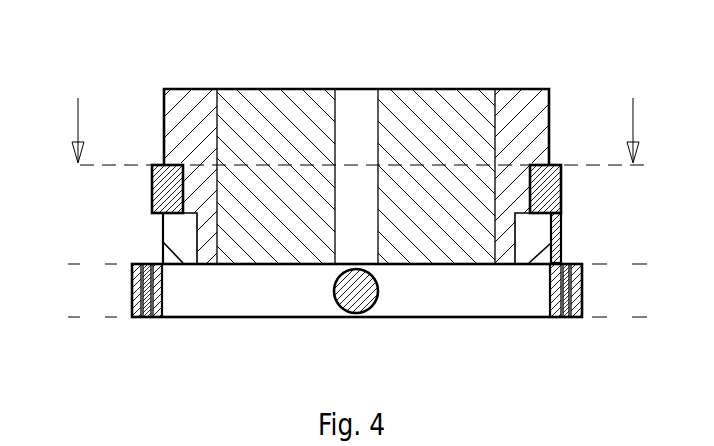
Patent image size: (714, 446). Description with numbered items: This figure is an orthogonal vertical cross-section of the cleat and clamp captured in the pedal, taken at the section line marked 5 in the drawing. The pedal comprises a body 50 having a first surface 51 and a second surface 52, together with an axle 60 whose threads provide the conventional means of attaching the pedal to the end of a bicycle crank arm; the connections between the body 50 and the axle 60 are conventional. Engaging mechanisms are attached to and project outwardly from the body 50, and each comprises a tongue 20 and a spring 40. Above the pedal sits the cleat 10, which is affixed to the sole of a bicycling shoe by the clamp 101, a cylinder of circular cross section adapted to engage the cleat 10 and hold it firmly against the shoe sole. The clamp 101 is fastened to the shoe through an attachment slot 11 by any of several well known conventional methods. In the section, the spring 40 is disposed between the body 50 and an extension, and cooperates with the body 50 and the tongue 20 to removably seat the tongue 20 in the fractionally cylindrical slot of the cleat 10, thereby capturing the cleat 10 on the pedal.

The section line / viewing direction of FIG. 5 is at (356, 118).
The cleat 10 is at (200, 113).
The attachment slot 11 is at (355, 110).
The clamp 101 is at (422, 143).
The tongue 20 is at (172, 190).
The spring 40 is at (147, 318).
The body 50 is at (132, 287).
The first surface 51 is at (95, 263).
The second surface 52 is at (103, 318).
The axle 60 is at (344, 315).